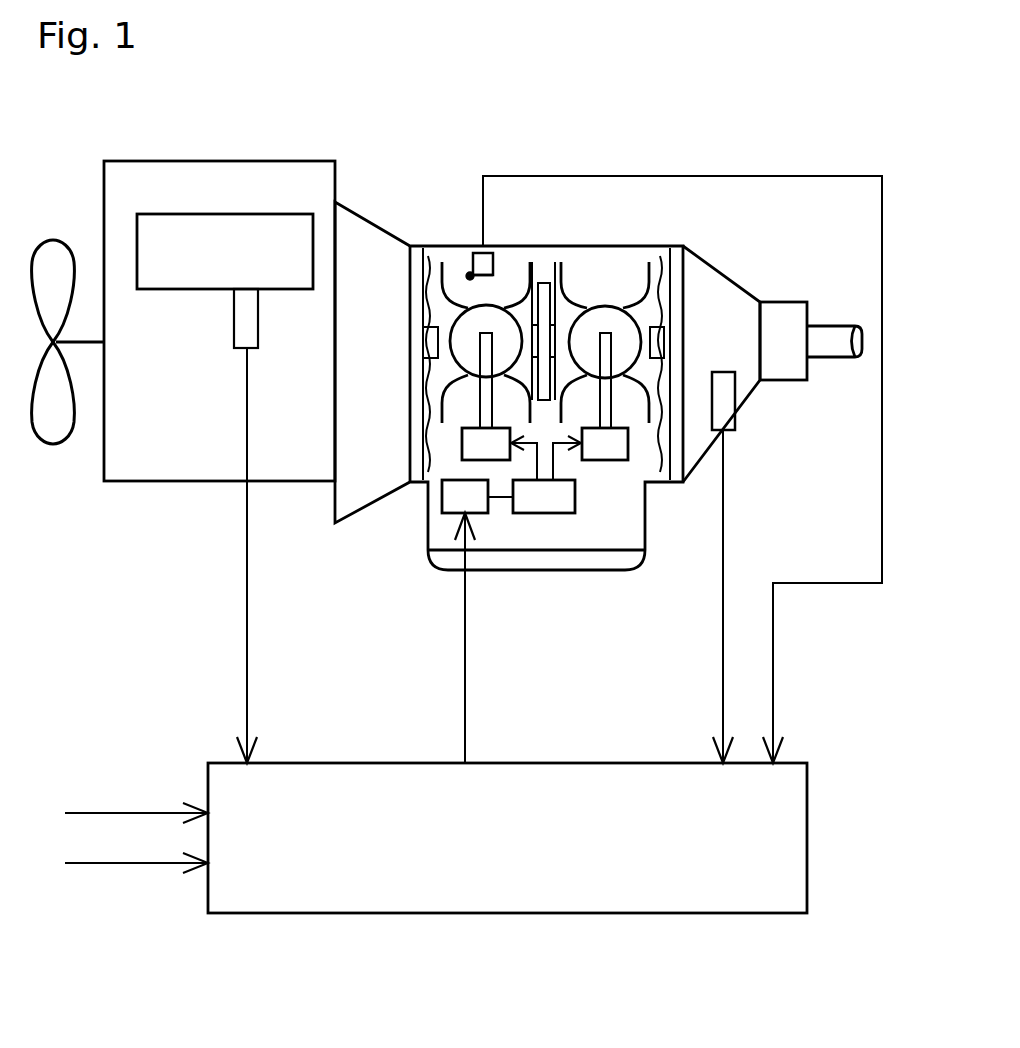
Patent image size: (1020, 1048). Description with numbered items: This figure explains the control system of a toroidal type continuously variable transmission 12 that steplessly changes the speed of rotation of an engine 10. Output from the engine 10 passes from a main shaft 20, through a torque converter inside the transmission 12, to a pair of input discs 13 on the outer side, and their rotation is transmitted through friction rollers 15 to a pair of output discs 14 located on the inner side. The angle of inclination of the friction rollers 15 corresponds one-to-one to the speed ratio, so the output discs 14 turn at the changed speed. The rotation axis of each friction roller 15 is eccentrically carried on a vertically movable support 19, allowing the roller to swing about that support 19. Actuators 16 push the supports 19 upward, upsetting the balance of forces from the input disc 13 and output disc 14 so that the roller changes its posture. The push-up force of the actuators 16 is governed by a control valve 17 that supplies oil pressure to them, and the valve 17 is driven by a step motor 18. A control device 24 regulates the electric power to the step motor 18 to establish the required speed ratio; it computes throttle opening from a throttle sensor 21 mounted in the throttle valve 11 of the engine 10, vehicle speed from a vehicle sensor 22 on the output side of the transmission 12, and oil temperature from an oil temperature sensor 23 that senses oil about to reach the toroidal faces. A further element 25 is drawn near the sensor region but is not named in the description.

The engine 10 is at (306, 161).
The throttle valve 11 is at (177, 290).
The toroidal type continuously variable transmission 12 is at (718, 271).
The input disc 13 is at (450, 292).
The output disc 14 is at (518, 262).
The friction roller 15 is at (464, 321).
The actuator 16 is at (462, 437).
The control valve 17 is at (565, 513).
The step motor 18 is at (480, 513).
The support 19 is at (610, 405).
The main shaft 20 is at (425, 383).
The throttle sensor 21 is at (259, 320).
The vehicle sensor 22 is at (736, 420).
The oil temperature sensor 23 is at (493, 262).
The control device 24 is at (320, 762).
The sensor element 25 is at (468, 274).